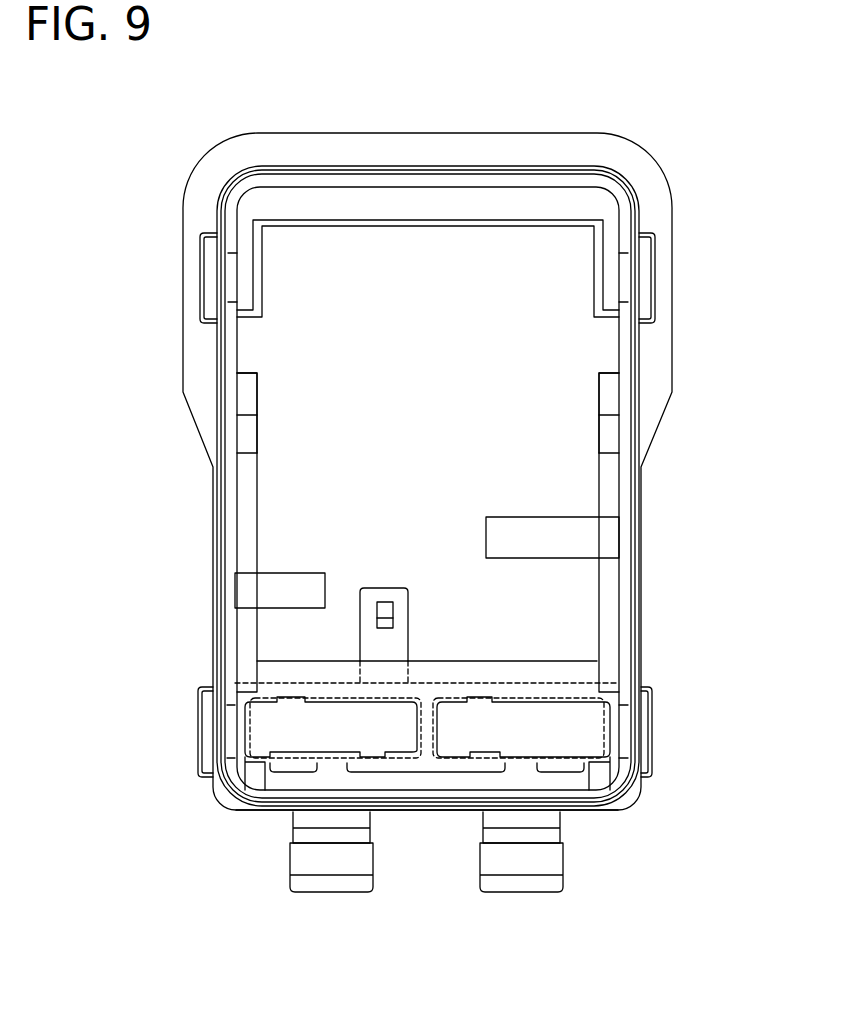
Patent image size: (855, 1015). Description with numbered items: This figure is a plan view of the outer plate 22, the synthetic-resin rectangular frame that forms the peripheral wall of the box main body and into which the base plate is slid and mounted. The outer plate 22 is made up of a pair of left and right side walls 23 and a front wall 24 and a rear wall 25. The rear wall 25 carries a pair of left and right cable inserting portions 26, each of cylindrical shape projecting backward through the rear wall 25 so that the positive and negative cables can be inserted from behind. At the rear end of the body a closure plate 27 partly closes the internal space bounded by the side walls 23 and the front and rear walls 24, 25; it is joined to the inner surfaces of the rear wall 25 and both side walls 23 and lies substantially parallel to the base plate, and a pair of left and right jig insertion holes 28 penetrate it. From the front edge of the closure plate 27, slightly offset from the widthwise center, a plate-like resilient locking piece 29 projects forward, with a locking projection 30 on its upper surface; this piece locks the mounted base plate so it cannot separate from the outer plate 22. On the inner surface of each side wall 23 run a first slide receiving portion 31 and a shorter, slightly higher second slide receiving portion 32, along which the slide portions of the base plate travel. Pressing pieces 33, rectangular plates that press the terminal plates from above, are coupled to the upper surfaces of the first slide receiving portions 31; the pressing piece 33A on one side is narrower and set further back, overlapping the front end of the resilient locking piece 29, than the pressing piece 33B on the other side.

The outer plate 22 is at (456, 166).
The side walls 23 is at (225, 343).
The front wall 24 is at (385, 171).
The rear wall 25 is at (420, 803).
The cable inserting portions 26 is at (342, 885).
The closure plate 27 is at (572, 670).
The jig insertion holes 28 is at (268, 705).
The resilient locking piece 29 is at (368, 642).
The locking projection 30 is at (377, 610).
The first slide receiving portion 31 is at (243, 485).
The second slide receiving portion 32 is at (243, 390).
The pressing pieces 33 is at (434, 543).
The pressing piece on one widthwise side 33A is at (298, 578).
The pressing piece on the other widthwise side 33B is at (530, 523).